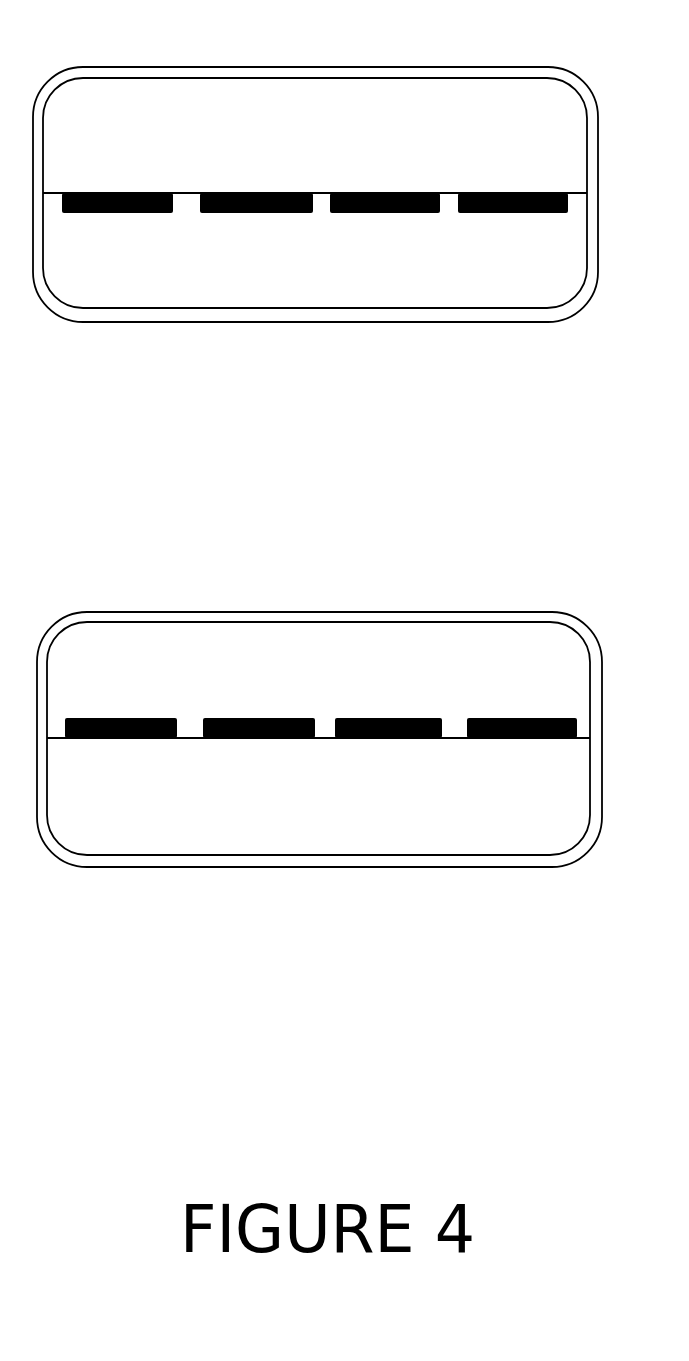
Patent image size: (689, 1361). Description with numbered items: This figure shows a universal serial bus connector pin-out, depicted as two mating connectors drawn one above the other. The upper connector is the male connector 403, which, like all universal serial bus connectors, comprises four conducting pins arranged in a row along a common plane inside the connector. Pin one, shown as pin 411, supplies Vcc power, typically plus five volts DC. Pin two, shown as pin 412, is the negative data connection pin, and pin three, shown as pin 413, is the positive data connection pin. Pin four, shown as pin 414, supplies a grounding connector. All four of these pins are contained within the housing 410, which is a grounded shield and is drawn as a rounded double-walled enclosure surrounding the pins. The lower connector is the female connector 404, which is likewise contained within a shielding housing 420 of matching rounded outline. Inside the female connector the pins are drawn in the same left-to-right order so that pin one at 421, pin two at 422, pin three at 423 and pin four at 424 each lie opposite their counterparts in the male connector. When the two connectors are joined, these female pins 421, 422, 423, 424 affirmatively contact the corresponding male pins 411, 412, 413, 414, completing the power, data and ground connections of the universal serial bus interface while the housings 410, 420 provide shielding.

The male connector 403 is at (515, 290).
The female connector 404 is at (518, 838).
The housing 410 is at (458, 322).
The pin 1 411 is at (468, 193).
The pin 2 412 is at (352, 213).
The pin 3 413 is at (217, 213).
The pin 4 414 is at (83, 193).
The shielding housing 420 is at (472, 867).
The pin 1 421 is at (87, 718).
The pin 2 422 is at (227, 738).
The pin 3 423 is at (355, 738).
The pin 4 424 is at (480, 718).